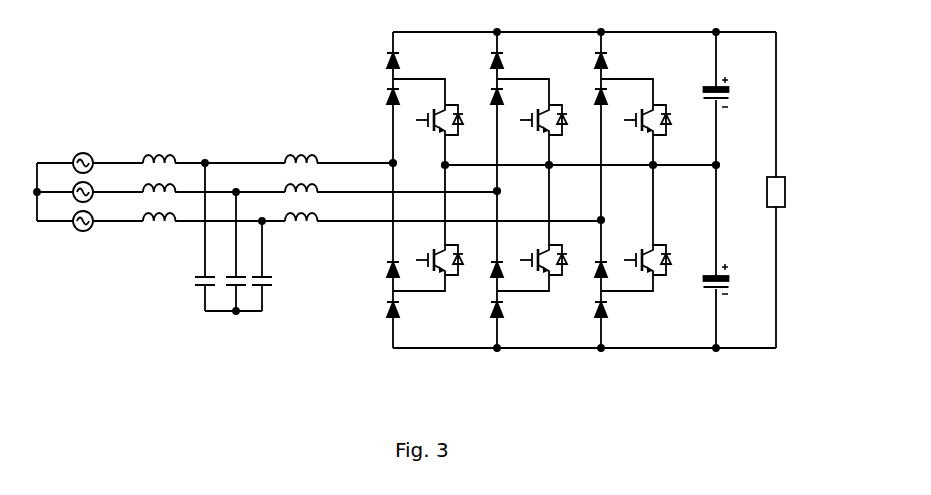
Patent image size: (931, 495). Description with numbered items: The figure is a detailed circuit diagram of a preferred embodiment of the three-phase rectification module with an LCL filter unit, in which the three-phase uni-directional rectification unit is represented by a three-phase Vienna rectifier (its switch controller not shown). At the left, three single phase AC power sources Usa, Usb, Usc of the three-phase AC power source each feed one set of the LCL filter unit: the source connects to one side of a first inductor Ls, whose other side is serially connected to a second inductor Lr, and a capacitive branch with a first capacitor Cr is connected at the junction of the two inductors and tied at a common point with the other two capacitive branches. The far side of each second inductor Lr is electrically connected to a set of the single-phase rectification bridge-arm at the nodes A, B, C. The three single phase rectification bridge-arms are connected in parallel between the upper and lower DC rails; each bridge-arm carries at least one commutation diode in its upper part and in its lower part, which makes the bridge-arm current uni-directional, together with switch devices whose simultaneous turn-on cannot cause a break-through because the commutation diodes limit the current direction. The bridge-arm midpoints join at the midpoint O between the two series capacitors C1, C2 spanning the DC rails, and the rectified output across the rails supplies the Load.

The single phase AC power source Usa is at (90, 157).
The single phase AC power source Usb is at (90, 187).
The single phase AC power source Usc is at (90, 217).
The phase A input node A is at (399, 170).
The phase B input node B is at (505, 198).
The phase C input node C is at (608, 227).
The DC-link midpoint O is at (595, 167).
The upper DC-link capacitor C1 is at (732, 92).
The lower DC-link capacitor C2 is at (730, 279).
The load Load is at (801, 192).